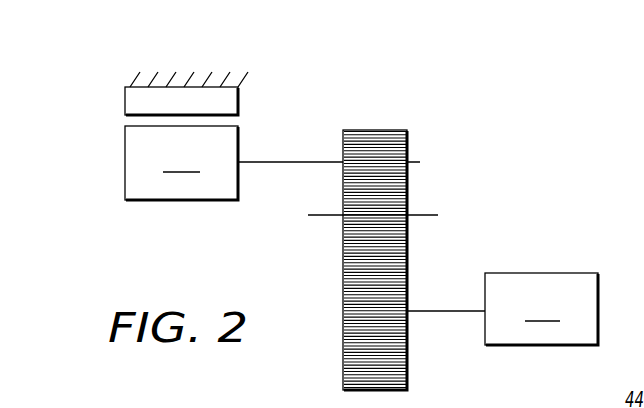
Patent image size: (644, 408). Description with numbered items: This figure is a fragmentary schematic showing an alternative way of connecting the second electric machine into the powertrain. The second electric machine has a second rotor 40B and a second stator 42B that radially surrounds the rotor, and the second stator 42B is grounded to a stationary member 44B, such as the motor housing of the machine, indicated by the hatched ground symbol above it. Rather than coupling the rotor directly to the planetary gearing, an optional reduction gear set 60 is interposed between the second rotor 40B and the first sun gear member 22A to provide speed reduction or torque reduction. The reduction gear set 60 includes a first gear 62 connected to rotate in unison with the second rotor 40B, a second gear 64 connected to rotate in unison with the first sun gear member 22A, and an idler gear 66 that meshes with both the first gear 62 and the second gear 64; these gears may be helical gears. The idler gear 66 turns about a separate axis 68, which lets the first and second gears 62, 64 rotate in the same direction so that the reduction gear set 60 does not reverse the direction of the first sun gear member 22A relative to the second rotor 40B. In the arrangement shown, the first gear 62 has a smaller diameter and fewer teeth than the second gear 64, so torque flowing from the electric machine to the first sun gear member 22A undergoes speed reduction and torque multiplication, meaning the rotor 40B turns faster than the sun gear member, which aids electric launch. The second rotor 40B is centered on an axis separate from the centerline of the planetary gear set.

The first sun gear member 22A is at (541, 309).
The second rotor 40B is at (181, 163).
The second stator 42B is at (125, 100).
The stationary member 44B is at (132, 84).
The reduction gear set 60 is at (325, 242).
The first gear 62 is at (408, 135).
The second gear 64 is at (341, 298).
The idler gear 66 is at (408, 208).
The separate axis 68 is at (415, 217).